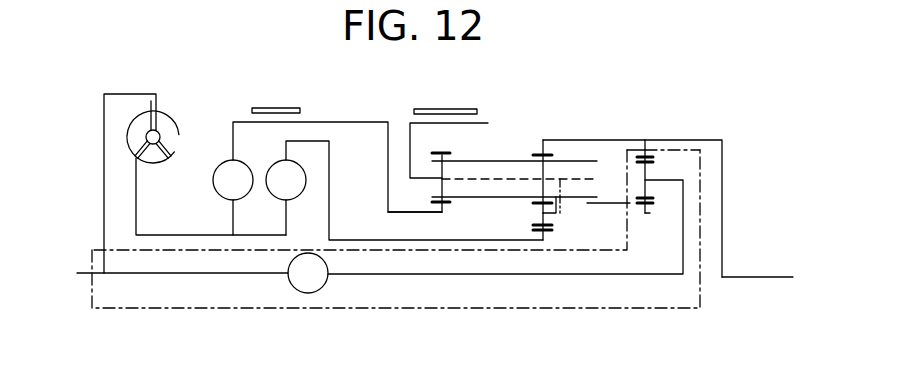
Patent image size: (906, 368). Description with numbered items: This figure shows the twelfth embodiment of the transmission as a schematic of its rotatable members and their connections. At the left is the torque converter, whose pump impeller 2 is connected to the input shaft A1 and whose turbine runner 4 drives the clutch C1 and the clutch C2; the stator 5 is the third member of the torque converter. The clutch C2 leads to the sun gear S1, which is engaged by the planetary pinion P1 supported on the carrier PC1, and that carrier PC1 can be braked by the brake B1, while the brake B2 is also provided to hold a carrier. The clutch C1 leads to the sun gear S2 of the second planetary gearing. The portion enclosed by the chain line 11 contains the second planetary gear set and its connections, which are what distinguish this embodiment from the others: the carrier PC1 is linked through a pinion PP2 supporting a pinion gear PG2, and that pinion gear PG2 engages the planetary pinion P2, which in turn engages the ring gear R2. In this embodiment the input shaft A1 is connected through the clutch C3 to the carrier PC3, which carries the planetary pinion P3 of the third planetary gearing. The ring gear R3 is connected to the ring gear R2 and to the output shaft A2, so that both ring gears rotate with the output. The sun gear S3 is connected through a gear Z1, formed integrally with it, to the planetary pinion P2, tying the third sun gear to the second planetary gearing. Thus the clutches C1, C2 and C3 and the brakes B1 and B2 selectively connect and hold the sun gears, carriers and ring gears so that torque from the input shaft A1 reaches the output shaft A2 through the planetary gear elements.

The pump impeller 2 is at (169, 117).
The turbine runner 4 is at (130, 146).
The stator 5 is at (163, 161).
The brake B1 is at (445, 96).
The brake B2 is at (276, 94).
The clutch C1 is at (404, 190).
The clutch C2 is at (327, 178).
The clutch C3 is at (202, 273).
The planetary pinion P1 is at (442, 181).
The carrier PC1 is at (422, 177).
The sun gear S1 is at (432, 213).
The ring gear R2 is at (545, 140).
The planetary pinion P2 is at (543, 168).
The pinion PP2 is at (553, 215).
The sun gear S2 is at (533, 233).
The pinion gear PG2 is at (541, 207).
The gear Z1 is at (606, 205).
The ring gear R3 is at (647, 141).
The planetary pinion P3 is at (648, 168).
The sun gear S3 is at (650, 214).
The carrier PC3 is at (668, 181).
The input shaft A1 is at (86, 275).
The output shaft A2 is at (771, 277).
The chain line 11 is at (683, 312).